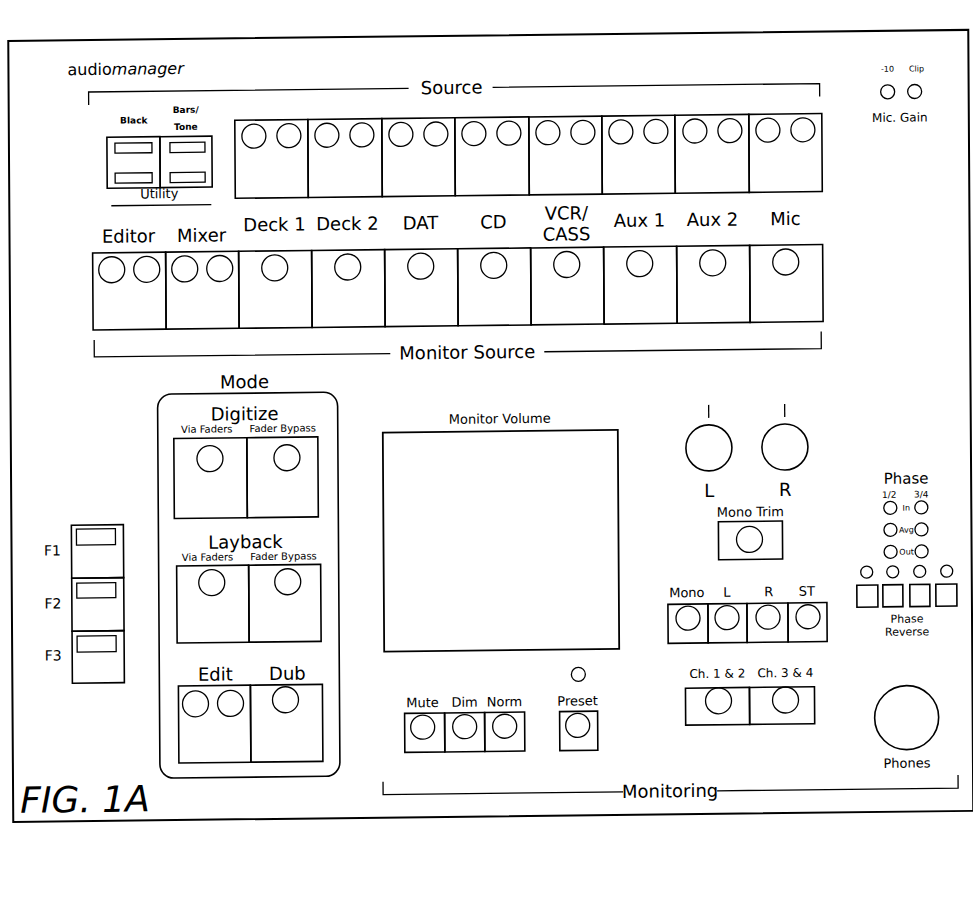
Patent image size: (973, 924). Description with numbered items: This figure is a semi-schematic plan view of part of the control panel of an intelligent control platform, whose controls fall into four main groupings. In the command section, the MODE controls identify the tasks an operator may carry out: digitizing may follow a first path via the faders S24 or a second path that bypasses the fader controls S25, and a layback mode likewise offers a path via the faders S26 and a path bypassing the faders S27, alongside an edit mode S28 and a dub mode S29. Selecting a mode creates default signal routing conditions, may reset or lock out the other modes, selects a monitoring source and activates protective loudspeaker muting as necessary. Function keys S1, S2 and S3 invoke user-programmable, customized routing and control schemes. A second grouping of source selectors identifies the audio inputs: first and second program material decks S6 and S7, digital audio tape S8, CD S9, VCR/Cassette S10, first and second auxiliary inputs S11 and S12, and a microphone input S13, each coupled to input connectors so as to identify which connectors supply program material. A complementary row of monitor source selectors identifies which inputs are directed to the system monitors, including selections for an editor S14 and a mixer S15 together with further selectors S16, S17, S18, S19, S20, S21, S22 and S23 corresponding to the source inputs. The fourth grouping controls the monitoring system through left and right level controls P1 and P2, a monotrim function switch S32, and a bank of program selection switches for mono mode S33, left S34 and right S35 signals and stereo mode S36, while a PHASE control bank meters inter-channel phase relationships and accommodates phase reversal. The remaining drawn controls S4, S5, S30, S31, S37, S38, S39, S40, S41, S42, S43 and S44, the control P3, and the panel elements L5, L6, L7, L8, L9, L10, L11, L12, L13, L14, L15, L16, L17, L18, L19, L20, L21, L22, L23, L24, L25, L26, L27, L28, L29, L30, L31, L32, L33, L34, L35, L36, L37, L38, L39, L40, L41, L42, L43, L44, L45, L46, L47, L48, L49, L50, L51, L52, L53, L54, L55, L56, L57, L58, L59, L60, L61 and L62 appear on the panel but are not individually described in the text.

The function key S1 is at (97, 552).
The function key S2 is at (98, 605).
The function key S3 is at (98, 658).
The Black utility switch S4 is at (133, 163).
The Bars/Tone utility switch S5 is at (186, 162).
The first program material deck source selector S6 is at (272, 159).
The second program material deck source selector S7 is at (345, 159).
The digital audio tape input selector S8 is at (419, 158).
The CD input selector S9 is at (492, 157).
The VCR/Cassette input selector S10 is at (566, 156).
The first auxiliary input selector S11 is at (639, 155).
The second auxiliary input selector S12 is at (712, 154).
The microphone input selector S13 is at (786, 154).
The editor monitor source selector S14 is at (129, 291).
The mixer monitor source selector S15 is at (202, 290).
The Deck 1 monitor source switch S16 is at (275, 289).
The Deck 2 monitor source switch S17 is at (348, 289).
The DAT monitor source switch S18 is at (421, 288).
The CD monitor source switch S19 is at (494, 287).
The VCR/CASS monitor source switch S20 is at (567, 286).
The Aux 1 monitor source switch S21 is at (640, 285).
The Aux 2 monitor source switch S22 is at (713, 284).
The Mic monitor source switch S23 is at (786, 284).
The digitize via faders mode control S24 is at (211, 479).
The digitize fader bypass mode control S25 is at (283, 478).
The layback via faders mode control S26 is at (213, 604).
The layback fader bypass mode control S27 is at (285, 603).
The edit mode control S28 is at (214, 724).
The dub mode control S29 is at (286, 723).
The Ch. 1 & 2 monitoring switch S30 is at (717, 706).
The Ch. 3 & 4 monitoring switch S31 is at (781, 706).
The monotrim function switch S32 is at (750, 541).
The mono mode selection switch S33 is at (688, 624).
The left signal selection switch S34 is at (727, 623).
The right signal selection switch S35 is at (767, 623).
The stereo mode selection switch S36 is at (807, 623).
The Mute switch S37 is at (425, 733).
The Dim switch S38 is at (465, 732).
The Norm switch S39 is at (505, 732).
The Preset switch S40 is at (579, 731).
The Phase reverse switch 1 S41 is at (868, 596).
The Phase reverse switch 2 S42 is at (894, 596).
The Phase reverse switch 3 S43 is at (921, 595).
The Phase reverse switch 4 S44 is at (947, 595).
The F1 indicator lamp L5 is at (95, 537).
The F2 indicator lamp L6 is at (96, 590).
The F3 indicator lamp L7 is at (96, 644).
The Black indicator lamp L8 is at (133, 148).
The Black indicator lamp L9 is at (133, 178).
The Bars/Tone indicator lamp L10 is at (187, 147).
The Bars/Tone indicator lamp L11 is at (187, 177).
The source indicator lamp L12 is at (254, 136).
The source indicator lamp L13 is at (289, 136).
The source indicator lamp L14 is at (327, 135).
The source indicator lamp L15 is at (362, 135).
The source indicator lamp L16 is at (401, 134).
The source indicator lamp L17 is at (436, 134).
The source indicator lamp L18 is at (474, 133).
The source indicator lamp L19 is at (509, 133).
The source indicator lamp L20 is at (548, 133).
The source indicator lamp L21 is at (583, 132).
The source indicator lamp L22 is at (621, 132).
The source indicator lamp L23 is at (656, 131).
The source indicator lamp L24 is at (695, 131).
The source indicator lamp L25 is at (730, 130).
The source indicator lamp L26 is at (768, 130).
The source indicator lamp L27 is at (803, 130).
The monitor source indicator lamp L28 is at (112, 270).
The monitor source indicator lamp L29 is at (147, 269).
The monitor source indicator lamp L30 is at (185, 269).
The monitor source indicator lamp L31 is at (220, 268).
The monitor source indicator lamp L32 is at (275, 268).
The monitor source indicator lamp L33 is at (348, 267).
The monitor source indicator lamp L34 is at (421, 266).
The monitor source indicator lamp L35 is at (494, 265).
The monitor source indicator lamp L36 is at (567, 264).
The monitor source indicator lamp L37 is at (640, 264).
The monitor source indicator lamp L38 is at (713, 263).
The monitor source indicator lamp L39 is at (786, 262).
The Digitize via faders lamp L40 is at (210, 458).
The Digitize fader bypass lamp L41 is at (287, 458).
The Layback via faders lamp L42 is at (212, 582).
The Layback fader bypass lamp L43 is at (288, 582).
The Edit lamp L44 is at (195, 704).
The Edit lamp L45 is at (230, 703).
The Dub lamp L46 is at (285, 700).
The Ch. 1 & 2 lamp L47 is at (718, 701).
The Ch. 3 & 4 lamp L48 is at (785, 700).
The Mono trim lamp L49 is at (749, 539).
The Mono lamp L50 is at (688, 618).
The L lamp L51 is at (727, 618).
The R lamp L52 is at (768, 617).
The ST lamp L53 is at (808, 617).
The Mute lamp L54 is at (423, 727).
The Dim lamp L55 is at (465, 727).
The Norm lamp L56 is at (505, 726).
The Preset lamp L57 is at (578, 725).
The preset indicator lamp L58 is at (578, 674).
The phase reverse lamp 1 L59 is at (867, 572).
The phase reverse lamp 2 L60 is at (893, 572).
The phase reverse lamp 3 L61 is at (920, 571).
The phase reverse lamp 4 L62 is at (947, 571).
The left level control P1 is at (709, 438).
The right level control P2 is at (785, 437).
The phones level potentiometer P3 is at (906, 717).